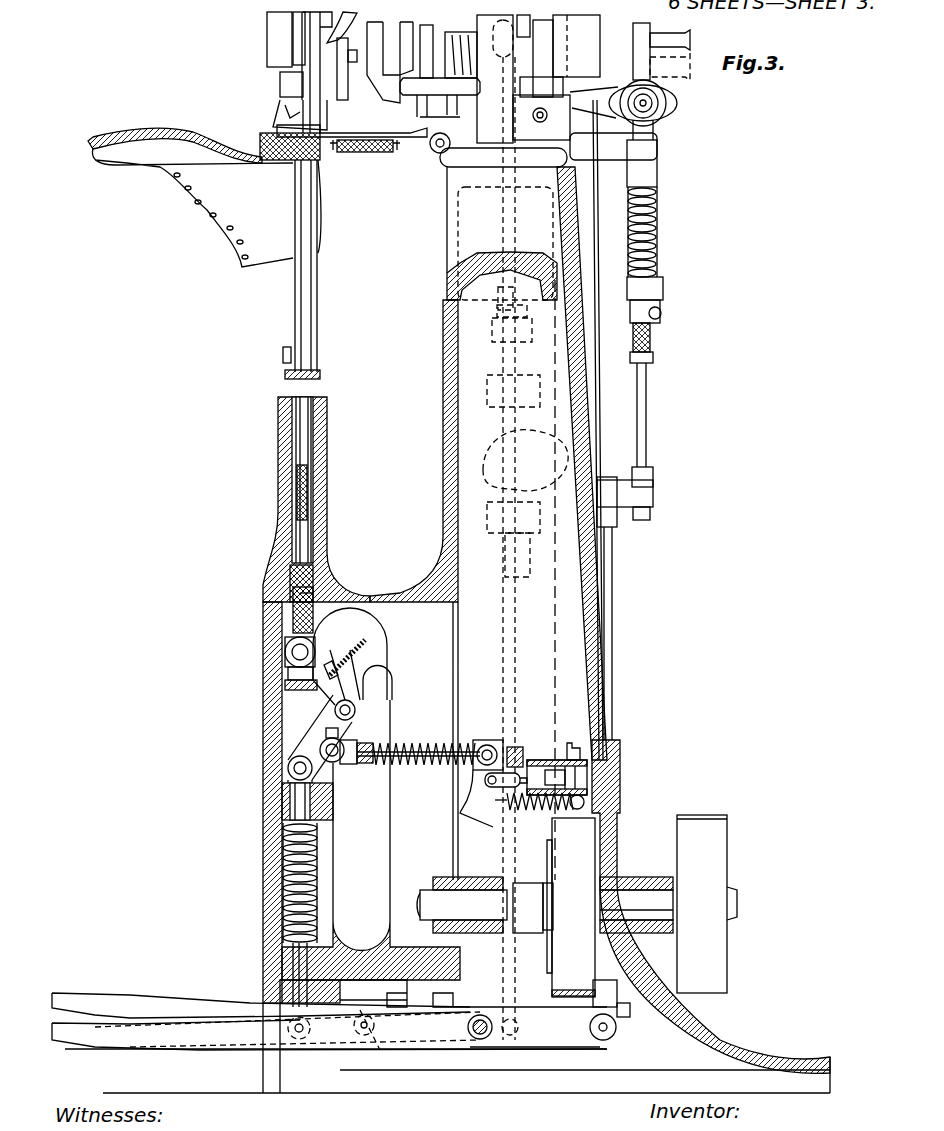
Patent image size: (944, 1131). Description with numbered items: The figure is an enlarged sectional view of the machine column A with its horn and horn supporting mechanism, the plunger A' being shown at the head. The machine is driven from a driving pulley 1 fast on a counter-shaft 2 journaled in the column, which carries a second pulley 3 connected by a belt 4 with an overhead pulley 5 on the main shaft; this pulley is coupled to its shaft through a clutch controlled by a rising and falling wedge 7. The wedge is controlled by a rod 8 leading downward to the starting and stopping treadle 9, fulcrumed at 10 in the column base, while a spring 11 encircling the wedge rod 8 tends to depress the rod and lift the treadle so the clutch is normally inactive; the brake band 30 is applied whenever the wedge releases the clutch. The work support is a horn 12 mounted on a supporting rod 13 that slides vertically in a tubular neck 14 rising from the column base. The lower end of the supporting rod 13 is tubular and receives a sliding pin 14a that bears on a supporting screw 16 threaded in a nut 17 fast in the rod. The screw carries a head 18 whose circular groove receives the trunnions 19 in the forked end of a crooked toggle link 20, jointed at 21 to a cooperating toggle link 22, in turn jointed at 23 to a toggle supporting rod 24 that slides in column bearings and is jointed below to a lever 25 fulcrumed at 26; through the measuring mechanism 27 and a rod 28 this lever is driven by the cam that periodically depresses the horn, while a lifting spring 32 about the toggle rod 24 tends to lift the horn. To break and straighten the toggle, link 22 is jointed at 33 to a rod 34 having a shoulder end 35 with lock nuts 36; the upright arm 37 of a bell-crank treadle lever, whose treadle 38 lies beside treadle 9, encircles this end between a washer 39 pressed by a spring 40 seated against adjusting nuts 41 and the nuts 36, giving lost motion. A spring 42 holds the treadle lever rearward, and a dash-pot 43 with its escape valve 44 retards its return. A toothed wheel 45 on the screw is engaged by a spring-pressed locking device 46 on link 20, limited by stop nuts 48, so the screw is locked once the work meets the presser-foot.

The frame A is at (466, 620).
The plunger A' is at (494, 520).
The driving pulley 1 is at (688, 830).
The counter-shaft 2 is at (640, 903).
The second pulley 3 is at (580, 843).
The belt 4 is at (568, 996).
The overhead pulley 5 is at (583, 67).
The wedge 7 is at (645, 57).
The wedge rod 8 is at (604, 607).
The starting and stopping treadle 9 is at (570, 1035).
The fulcrum 10 is at (480, 1038).
The spring 11 is at (653, 212).
The horn 12 is at (292, 290).
The supporting rod 13 is at (300, 432).
The tubular neck 14 is at (325, 425).
The sliding pin 14a is at (300, 573).
The supporting screw 16 is at (293, 622).
The nut 17 is at (307, 593).
The head 18 is at (288, 665).
The pins or trunnions 19 is at (287, 650).
The toggle link 20 is at (337, 637).
The joint 21 is at (353, 705).
The toggle link 22 is at (308, 745).
The joint 23 is at (513, 58).
The toggle supporting rod 24 is at (295, 808).
The lever 25 is at (318, 1043).
The fulcrum 26 is at (370, 1105).
The measuring mechanism 27 is at (533, 427).
The rod 28 is at (500, 215).
The brake band 30 is at (540, 47).
The lifting spring 32 is at (287, 866).
The joint 33 is at (345, 745).
The toggle operating rod 34 is at (420, 745).
The shoulder end 35 is at (500, 737).
The lock nuts 36 is at (520, 747).
The upright arm 37 is at (493, 827).
The treadle 38 is at (160, 1000).
The washer 39 is at (474, 742).
The spring 40 is at (400, 766).
The adjusting nuts 41 is at (365, 766).
The spring 42 is at (530, 810).
The dash-pot 43 is at (545, 760).
The escape valve 44 is at (580, 750).
The toothed wheel 45 is at (285, 687).
The locking device 46 is at (327, 680).
The stop nuts 48 is at (367, 643).